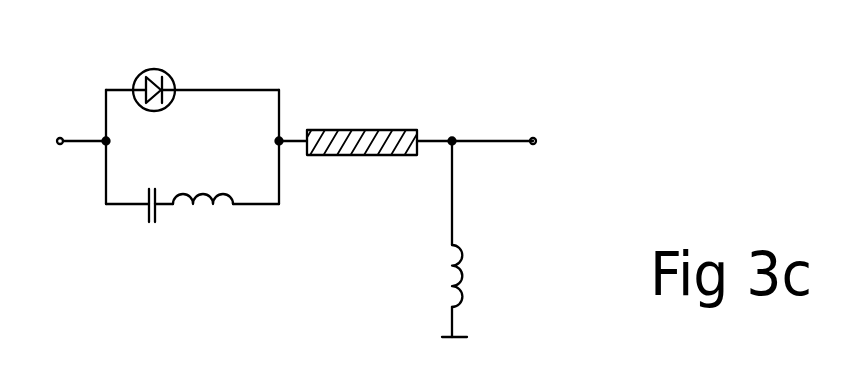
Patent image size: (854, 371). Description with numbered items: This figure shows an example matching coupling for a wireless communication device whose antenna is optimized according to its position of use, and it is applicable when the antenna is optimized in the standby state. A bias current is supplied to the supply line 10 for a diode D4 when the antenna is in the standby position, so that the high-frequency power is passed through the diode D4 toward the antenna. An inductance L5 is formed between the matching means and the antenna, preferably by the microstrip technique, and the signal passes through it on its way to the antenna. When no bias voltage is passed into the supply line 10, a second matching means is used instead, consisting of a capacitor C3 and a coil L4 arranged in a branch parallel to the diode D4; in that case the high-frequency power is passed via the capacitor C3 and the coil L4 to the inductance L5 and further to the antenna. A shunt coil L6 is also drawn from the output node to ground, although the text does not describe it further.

The supply line 10 is at (82, 141).
The diode D4 is at (155, 73).
The capacitor C3 is at (155, 192).
The coil L4 is at (203, 183).
The inductance L5 is at (406, 128).
The shunt inductor to ground L6 is at (475, 239).